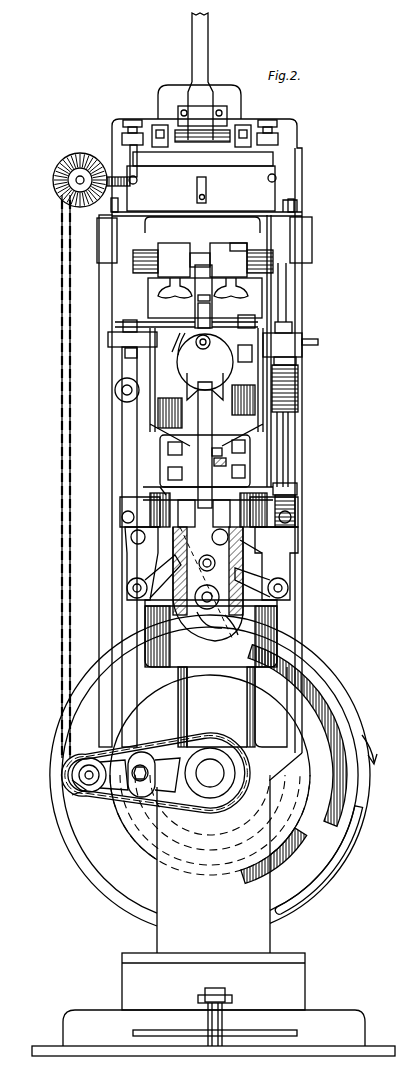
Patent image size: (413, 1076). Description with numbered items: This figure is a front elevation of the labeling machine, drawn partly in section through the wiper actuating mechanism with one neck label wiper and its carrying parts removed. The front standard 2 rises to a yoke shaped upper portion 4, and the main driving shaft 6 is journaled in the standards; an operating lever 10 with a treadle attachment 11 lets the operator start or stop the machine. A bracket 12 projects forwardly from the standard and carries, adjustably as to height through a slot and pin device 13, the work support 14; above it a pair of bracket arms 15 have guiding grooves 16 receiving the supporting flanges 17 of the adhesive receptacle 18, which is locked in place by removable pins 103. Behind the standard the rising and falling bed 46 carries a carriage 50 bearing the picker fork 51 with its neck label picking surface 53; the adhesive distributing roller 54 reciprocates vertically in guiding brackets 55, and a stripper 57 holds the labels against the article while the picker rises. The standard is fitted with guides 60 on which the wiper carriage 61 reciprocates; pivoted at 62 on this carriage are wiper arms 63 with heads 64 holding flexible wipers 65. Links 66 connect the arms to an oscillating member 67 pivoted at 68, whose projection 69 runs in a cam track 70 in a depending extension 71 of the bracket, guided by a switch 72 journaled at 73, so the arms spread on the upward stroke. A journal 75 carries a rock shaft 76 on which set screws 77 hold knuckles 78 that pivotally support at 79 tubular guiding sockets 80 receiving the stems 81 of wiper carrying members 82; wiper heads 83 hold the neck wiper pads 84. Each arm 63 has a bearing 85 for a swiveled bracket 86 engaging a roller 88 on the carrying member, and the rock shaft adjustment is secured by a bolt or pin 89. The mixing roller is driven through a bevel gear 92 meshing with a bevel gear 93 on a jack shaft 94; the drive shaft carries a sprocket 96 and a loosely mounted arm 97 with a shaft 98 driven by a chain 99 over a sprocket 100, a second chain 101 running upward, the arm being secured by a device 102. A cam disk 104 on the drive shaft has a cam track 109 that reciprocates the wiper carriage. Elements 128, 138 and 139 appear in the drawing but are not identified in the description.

The front standard 2 is at (213, 904).
The yoke shaped upper portion 4 is at (112, 660).
The main driving shaft 6 is at (224, 773).
The operating lever 10 is at (218, 989).
The treadle attachment 11 is at (267, 1031).
The bracket 12 is at (205, 461).
The slot and pin device 13 is at (231, 461).
The work support 14 is at (215, 394).
The bracket arms 15 is at (103, 246).
The guiding grooves 16 is at (296, 212).
The supporting flanges 17 is at (295, 209).
The adhesive receptacle 18 is at (201, 188).
The rising and falling bed 46 is at (150, 321).
The carriage 50 is at (148, 296).
The picker fork 51 is at (243, 292).
The neck label picking surface 53 is at (203, 295).
The adhesive distributing roller 54 is at (176, 258).
The guiding brackets 55 is at (122, 134).
The stripper 57 is at (200, 346).
The guides 60 is at (186, 724).
The carriage 61 is at (225, 668).
The pivot 62 is at (132, 541).
The wiper arms 63 is at (290, 460).
The heads 64 is at (112, 339).
The flexible wipers 65 is at (178, 337).
The links 66 is at (250, 575).
The oscillating member 67 is at (234, 638).
The pivot 68 is at (196, 585).
The projection 69 is at (268, 538).
The cam track 70 is at (195, 570).
The depending extension 71 is at (221, 631).
The switch 72 is at (238, 601).
The journal 73 is at (180, 550).
The journal 75 is at (185, 506).
The rock shaft 76 is at (162, 492).
The set screws 77 is at (150, 498).
The knuckles 78 is at (293, 521).
The pivot 79 is at (292, 530).
The guiding sockets 80 is at (296, 509).
The stems 81 is at (288, 446).
The wiper carrying members 82 is at (296, 360).
The wiper heads 83 is at (300, 340).
The neck wiper pads 84 is at (258, 332).
The bearing 85 is at (115, 393).
The swiveled bracket 86 is at (298, 386).
The roller or projection 88 is at (296, 490).
The bolt or pin 89 is at (223, 457).
The bevel gear 92 is at (118, 176).
The bevel gear 93 is at (72, 160).
The jack shaft 94 is at (70, 190).
The sprocket 96 is at (232, 801).
The arm 97 is at (120, 797).
The shaft 98 is at (108, 785).
The chain 99 is at (134, 797).
The sprocket 100 is at (76, 787).
The chain 101 is at (62, 470).
The device 102 is at (140, 801).
The removable pins 103 is at (124, 211).
The cam disk 104 is at (368, 786).
The cam track 109 is at (330, 690).
The block 128 is at (242, 241).
The rod 138 is at (208, 44).
The clamp 139 is at (229, 129).